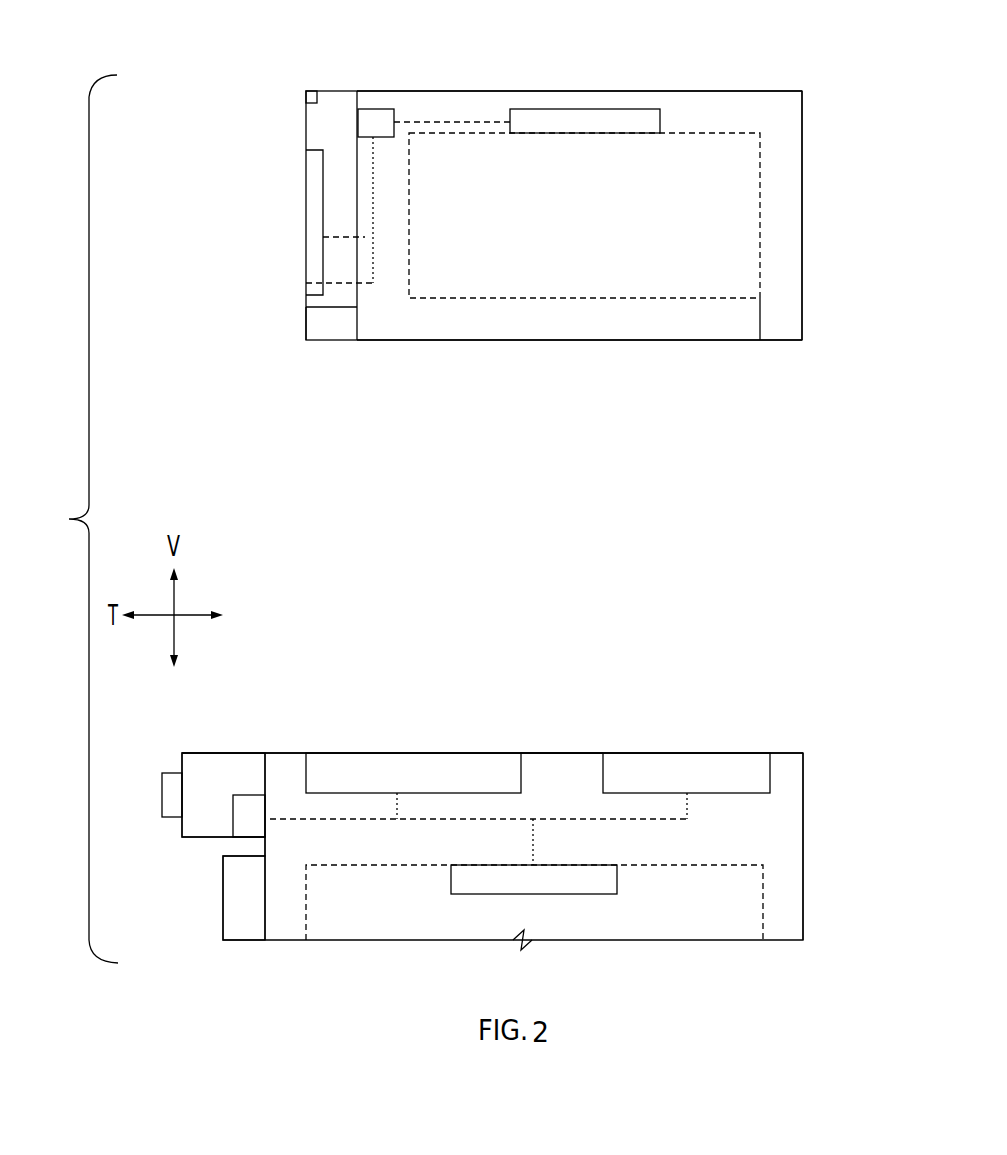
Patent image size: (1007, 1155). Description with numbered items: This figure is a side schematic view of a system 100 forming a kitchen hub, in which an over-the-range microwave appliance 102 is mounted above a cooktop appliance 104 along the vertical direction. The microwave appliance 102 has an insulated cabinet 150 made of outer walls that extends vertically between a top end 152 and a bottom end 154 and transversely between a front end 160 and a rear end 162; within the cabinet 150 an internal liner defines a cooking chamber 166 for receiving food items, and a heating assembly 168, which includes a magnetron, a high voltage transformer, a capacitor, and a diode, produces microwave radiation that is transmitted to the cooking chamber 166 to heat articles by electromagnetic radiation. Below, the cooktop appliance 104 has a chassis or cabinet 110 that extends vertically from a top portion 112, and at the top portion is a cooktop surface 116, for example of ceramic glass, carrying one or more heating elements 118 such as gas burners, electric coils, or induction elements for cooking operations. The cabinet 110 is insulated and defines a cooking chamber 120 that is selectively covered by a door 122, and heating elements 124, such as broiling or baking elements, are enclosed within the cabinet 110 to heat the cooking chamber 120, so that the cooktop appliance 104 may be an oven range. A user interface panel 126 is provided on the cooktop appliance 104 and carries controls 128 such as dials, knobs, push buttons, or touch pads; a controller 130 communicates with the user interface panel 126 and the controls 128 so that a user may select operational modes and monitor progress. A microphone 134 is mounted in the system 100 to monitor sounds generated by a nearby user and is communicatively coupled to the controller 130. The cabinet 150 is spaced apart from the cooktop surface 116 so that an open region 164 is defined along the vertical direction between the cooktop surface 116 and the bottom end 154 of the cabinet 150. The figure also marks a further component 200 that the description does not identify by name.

The system 100 is at (71, 519).
The microwave appliance 102 is at (812, 173).
The cooktop appliance 104 is at (822, 831).
The cabinet 110 is at (795, 918).
The top portion 112 is at (792, 742).
The cooktop surface 116 is at (563, 742).
The heating elements 118 is at (348, 765).
The cooking chamber 120 is at (669, 923).
The door 122 is at (238, 897).
The heating elements 124 is at (455, 880).
The user interface panel 126 is at (182, 770).
The controls 128 is at (170, 800).
The controller 130 is at (380, 115).
The microphone 134 is at (310, 90).
The cabinet 150 is at (757, 330).
The top end 152 is at (695, 85).
The bottom end 154 is at (712, 350).
The front end 160 is at (348, 327).
The rear end 162 is at (812, 313).
The open region 164 is at (502, 650).
The cooking chamber 166 is at (585, 240).
The heating assembly 168 is at (585, 120).
The conductive trace 200 is at (463, 150).